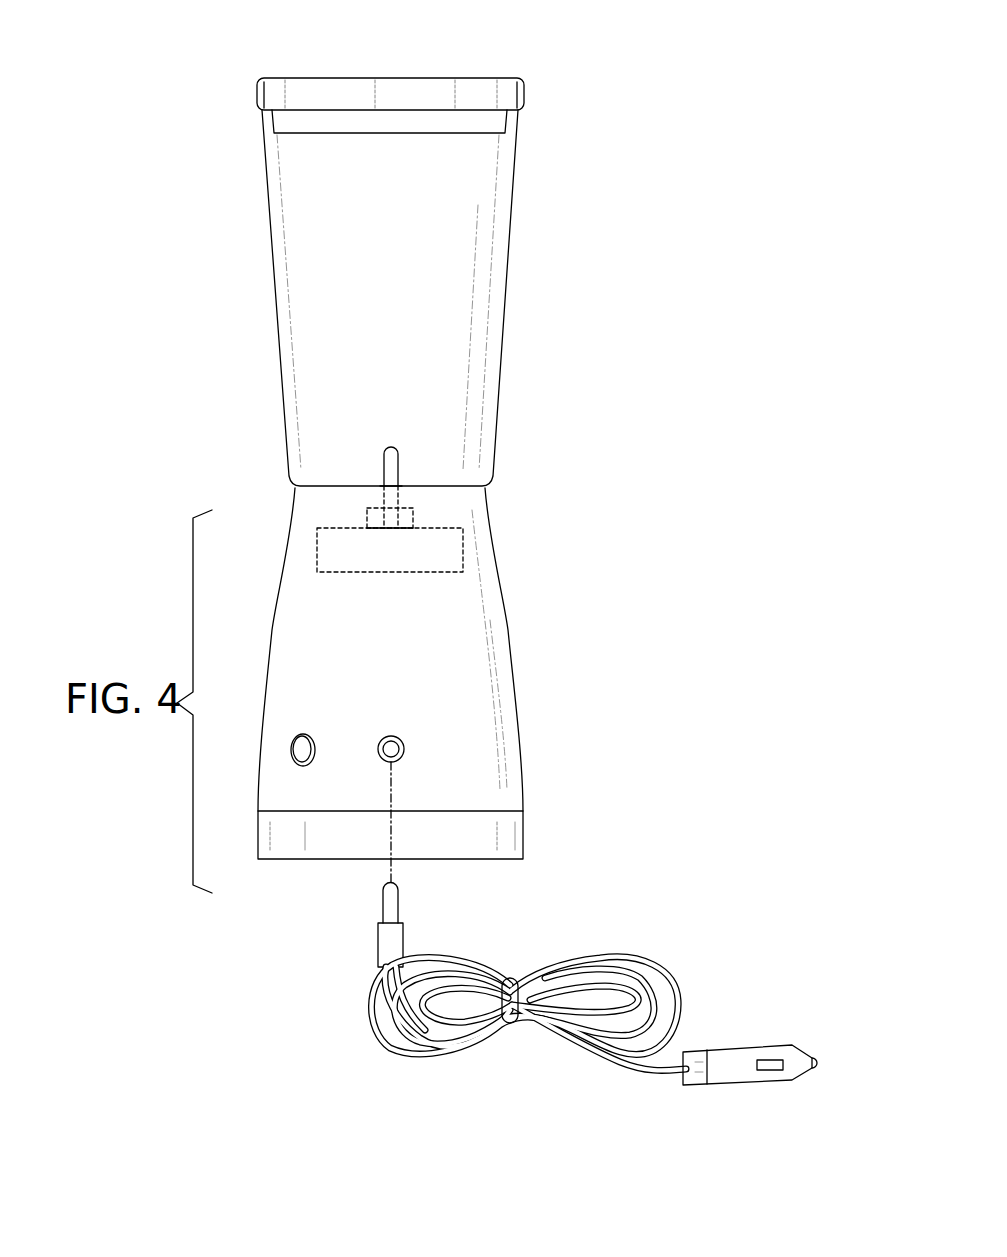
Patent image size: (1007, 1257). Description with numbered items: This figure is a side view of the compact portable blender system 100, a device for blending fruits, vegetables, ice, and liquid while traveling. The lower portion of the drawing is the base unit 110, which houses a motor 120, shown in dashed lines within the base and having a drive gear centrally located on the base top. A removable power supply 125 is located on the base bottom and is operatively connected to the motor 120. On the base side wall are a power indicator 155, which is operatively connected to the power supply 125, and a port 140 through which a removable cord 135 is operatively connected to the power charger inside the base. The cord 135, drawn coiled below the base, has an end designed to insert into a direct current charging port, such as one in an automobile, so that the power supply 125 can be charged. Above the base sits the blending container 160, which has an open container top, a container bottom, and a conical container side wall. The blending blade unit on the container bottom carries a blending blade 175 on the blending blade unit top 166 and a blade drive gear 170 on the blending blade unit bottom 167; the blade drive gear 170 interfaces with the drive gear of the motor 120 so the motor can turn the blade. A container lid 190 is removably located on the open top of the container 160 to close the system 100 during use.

The compact portable blender system 100 is at (138, 80).
The container lid 190 is at (513, 92).
The blending container 160 is at (480, 307).
The blending blade unit top 166 is at (393, 486).
The blade drive gear 170 is at (413, 508).
The blending blade 175 is at (392, 472).
The blending blade unit bottom 167 is at (387, 528).
The motor 120 is at (443, 552).
The base unit 110 is at (488, 595).
The port 140 is at (397, 745).
The removable power supply 125 is at (500, 840).
The power indicator 155 is at (305, 762).
The removable cord 135 is at (648, 965).